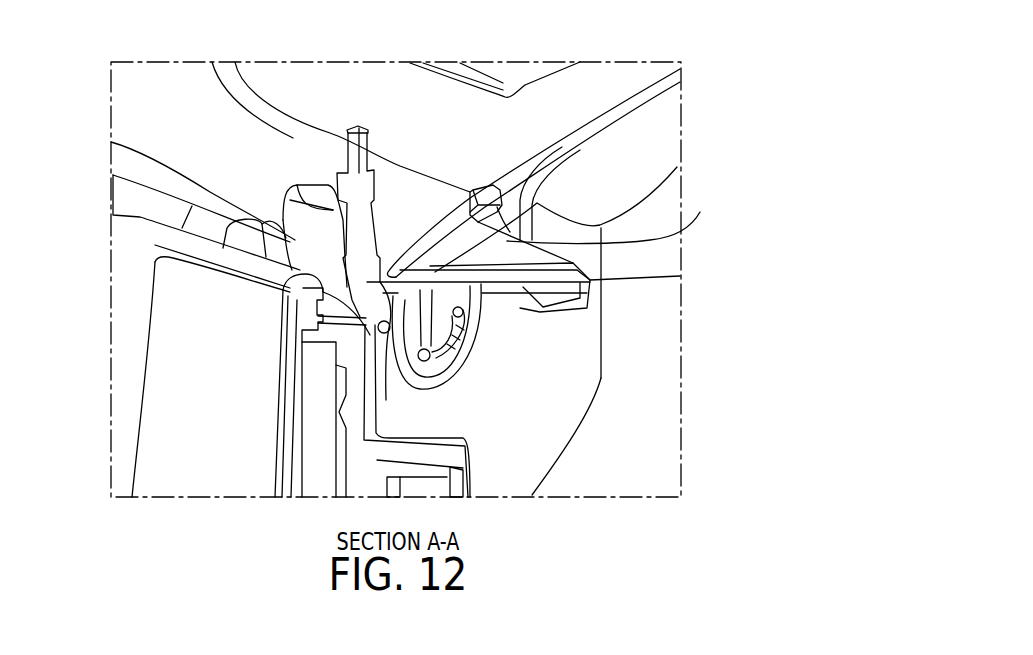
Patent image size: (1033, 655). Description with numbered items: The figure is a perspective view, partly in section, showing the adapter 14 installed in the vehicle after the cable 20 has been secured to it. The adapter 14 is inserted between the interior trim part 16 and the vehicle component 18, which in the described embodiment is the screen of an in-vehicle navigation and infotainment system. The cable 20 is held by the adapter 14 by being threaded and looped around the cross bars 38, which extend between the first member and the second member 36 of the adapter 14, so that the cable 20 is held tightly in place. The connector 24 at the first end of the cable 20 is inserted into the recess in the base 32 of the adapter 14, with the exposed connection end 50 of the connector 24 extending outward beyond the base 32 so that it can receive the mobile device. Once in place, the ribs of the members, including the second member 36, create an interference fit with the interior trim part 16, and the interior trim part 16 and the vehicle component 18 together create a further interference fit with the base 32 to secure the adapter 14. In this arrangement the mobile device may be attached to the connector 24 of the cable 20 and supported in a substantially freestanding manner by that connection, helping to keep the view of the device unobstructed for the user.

The adapter 14 is at (317, 197).
The exposed connection end 50 is at (360, 127).
The connector 24 is at (367, 192).
The interior trim part 16 is at (441, 187).
The base 32 is at (111, 142).
The vehicle component 18 is at (155, 350).
The second member 36 is at (577, 213).
The cross bars 38 is at (462, 313).
The cable 20 is at (467, 330).